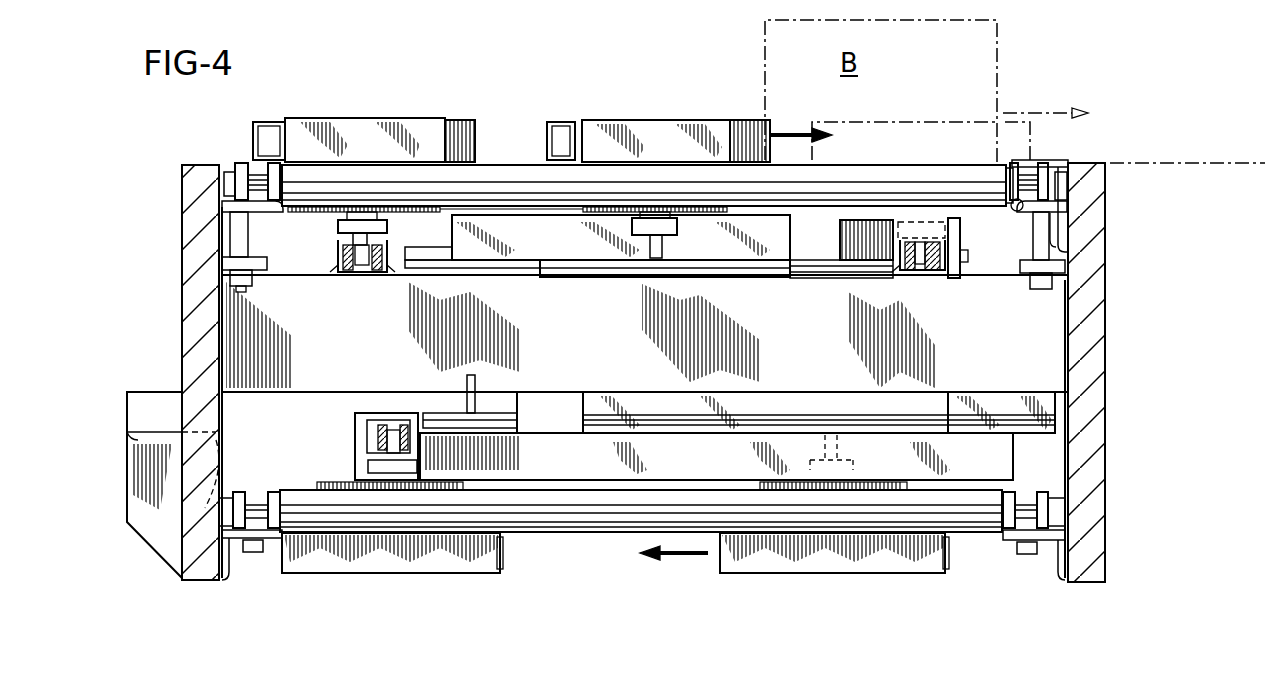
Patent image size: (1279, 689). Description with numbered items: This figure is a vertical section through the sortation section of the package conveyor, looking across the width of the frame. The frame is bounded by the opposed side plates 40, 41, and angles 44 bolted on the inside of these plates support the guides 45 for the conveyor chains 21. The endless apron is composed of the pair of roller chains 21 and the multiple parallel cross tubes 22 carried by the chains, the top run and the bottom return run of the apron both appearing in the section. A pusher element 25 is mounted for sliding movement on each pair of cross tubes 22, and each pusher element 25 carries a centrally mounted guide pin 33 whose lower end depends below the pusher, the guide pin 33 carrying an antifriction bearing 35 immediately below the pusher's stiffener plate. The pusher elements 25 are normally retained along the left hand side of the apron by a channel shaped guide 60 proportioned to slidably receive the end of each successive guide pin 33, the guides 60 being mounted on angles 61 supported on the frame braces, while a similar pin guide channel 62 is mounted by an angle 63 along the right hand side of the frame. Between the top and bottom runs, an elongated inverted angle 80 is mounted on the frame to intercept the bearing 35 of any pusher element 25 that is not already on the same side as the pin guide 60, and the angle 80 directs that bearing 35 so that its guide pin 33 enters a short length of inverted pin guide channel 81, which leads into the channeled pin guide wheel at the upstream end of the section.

The roller chains 21 is at (258, 180).
The cross tubes 22 is at (500, 172).
The pusher element 25 is at (362, 130).
The guide pin 33 is at (655, 258).
The antifriction bearing 35 is at (680, 228).
The side plate 40 is at (182, 312).
The side plate 41 is at (1105, 378).
The angles 44 is at (1063, 243).
The guides 45 is at (1020, 205).
The channel shaped guide 60 is at (378, 250).
The angles 61 is at (347, 270).
The pin guide channel 62 is at (910, 270).
The angle 63 is at (938, 275).
The inverted angle 80 is at (738, 450).
The inverted pin guide channel 81 is at (380, 442).